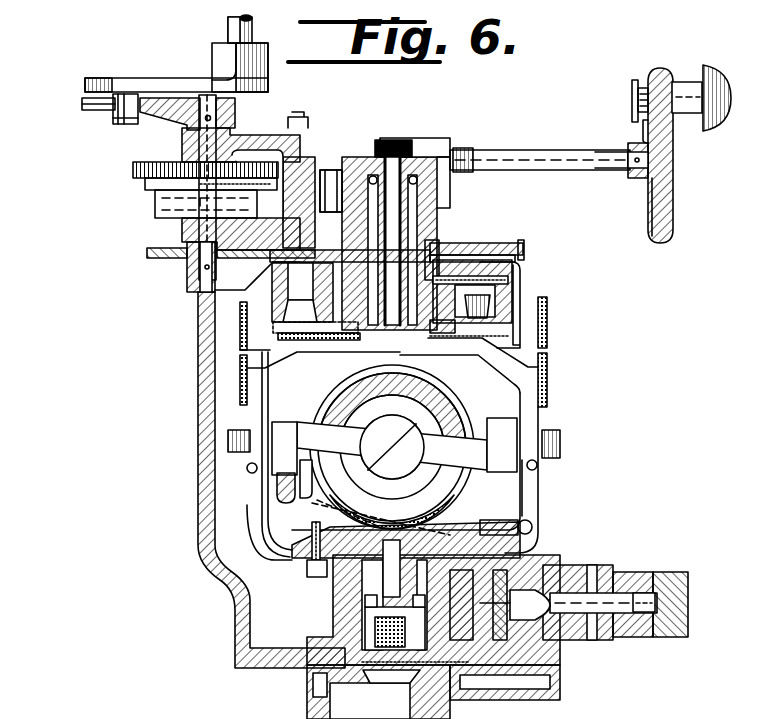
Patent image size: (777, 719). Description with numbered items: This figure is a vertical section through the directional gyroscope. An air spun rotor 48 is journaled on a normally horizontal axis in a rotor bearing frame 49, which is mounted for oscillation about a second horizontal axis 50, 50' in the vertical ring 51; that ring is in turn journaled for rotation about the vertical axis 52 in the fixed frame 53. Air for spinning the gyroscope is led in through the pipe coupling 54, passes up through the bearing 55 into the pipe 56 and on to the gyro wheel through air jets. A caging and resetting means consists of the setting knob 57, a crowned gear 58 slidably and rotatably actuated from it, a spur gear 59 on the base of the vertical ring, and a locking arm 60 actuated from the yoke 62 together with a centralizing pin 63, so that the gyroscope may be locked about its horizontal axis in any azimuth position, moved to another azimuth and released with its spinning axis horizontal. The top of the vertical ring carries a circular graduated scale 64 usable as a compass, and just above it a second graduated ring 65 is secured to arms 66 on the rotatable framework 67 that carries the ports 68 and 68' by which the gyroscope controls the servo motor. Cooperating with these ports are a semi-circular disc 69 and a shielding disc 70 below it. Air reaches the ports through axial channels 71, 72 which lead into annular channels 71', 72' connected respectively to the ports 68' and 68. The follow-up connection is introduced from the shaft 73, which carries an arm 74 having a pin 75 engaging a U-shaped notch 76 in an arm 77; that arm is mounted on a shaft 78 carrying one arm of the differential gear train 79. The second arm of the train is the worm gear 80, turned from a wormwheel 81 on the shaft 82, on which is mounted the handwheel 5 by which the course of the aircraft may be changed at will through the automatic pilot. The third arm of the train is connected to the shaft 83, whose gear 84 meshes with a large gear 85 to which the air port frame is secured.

The handwheel 5 is at (679, 154).
The air spun rotor 48 is at (440, 413).
The rotor bearing frame 49 is at (472, 466).
The second horizontal axis 50 is at (207, 451).
The second horizontal axis 50' is at (566, 448).
The vertical ring 51 is at (540, 502).
The vertical axis 52 is at (418, 662).
The fixed frame 53 is at (558, 665).
The pipe coupling 54 is at (313, 706).
The bearing 55 is at (345, 612).
The pipe 56 is at (312, 515).
The setting knob 57 is at (686, 576).
The crowned gear 58 is at (530, 556).
The spur gear 59 is at (316, 580).
The locking arm 60 is at (275, 490).
The yoke 62 is at (472, 647).
The centralizing pin 63 is at (505, 640).
The circular graduated scale 64 is at (548, 398).
The second graduated ring 65 is at (543, 298).
The arms 66 is at (524, 276).
The rotatable framework 67 is at (362, 187).
The port 68 is at (265, 353).
The port 68' is at (569, 322).
The semi-circular disc 69 is at (302, 338).
The shielding disc 70 is at (292, 348).
The axial channel 71 is at (430, 191).
The annular channel 71' is at (464, 249).
The axial channel 72 is at (341, 191).
The annular channel 72' is at (449, 202).
The shaft 73 is at (230, 30).
The arm 74 is at (135, 84).
The pin 75 is at (115, 122).
The U-shaped notch 76 is at (95, 104).
The arm 77 is at (165, 100).
The shaft 78 is at (218, 124).
The differential gear train 79 is at (165, 210).
The worm gear 80 is at (133, 170).
The wormwheel 81 is at (178, 162).
The shaft 82 is at (528, 158).
The shaft 83 is at (205, 265).
The gear 84 is at (147, 255).
The large gear 85 is at (518, 252).